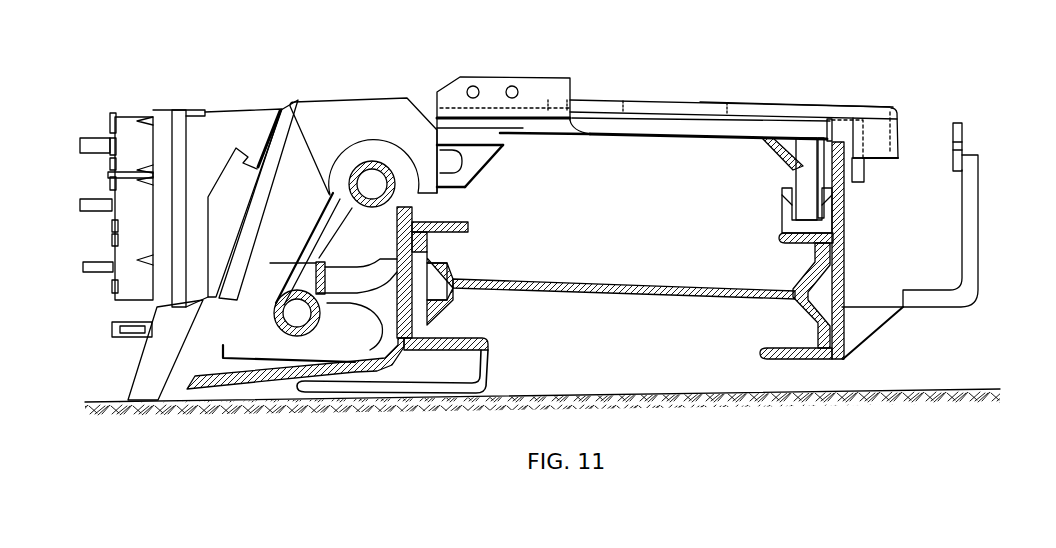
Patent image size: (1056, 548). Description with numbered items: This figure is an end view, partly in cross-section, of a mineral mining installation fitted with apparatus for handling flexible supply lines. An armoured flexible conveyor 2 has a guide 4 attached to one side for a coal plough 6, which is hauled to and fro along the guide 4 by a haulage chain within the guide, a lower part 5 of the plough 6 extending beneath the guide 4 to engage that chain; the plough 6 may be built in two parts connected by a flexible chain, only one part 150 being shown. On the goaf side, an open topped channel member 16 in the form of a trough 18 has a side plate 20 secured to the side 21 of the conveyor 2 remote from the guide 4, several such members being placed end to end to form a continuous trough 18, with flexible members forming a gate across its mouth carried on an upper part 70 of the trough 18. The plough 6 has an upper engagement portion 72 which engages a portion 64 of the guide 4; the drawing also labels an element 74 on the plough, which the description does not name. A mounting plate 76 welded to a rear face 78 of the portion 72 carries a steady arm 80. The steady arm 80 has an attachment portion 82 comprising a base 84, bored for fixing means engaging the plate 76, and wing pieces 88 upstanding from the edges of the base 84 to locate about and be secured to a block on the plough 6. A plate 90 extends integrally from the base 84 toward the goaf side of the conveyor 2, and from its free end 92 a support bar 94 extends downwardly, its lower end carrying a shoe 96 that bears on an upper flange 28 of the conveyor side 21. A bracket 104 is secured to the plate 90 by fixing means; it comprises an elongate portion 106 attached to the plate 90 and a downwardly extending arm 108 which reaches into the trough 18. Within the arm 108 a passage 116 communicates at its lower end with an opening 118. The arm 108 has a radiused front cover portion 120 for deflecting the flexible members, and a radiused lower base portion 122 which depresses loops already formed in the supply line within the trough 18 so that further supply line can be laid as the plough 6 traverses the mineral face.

The armoured flexible conveyor 2 is at (600, 300).
The guide 4 is at (331, 212).
The lower part of the plough 5 is at (328, 345).
The coal plough 6 is at (250, 105).
The open topped channel member 16 is at (982, 193).
The trough 18 is at (952, 243).
The side plate 20 is at (855, 332).
The side of the conveyor 21 is at (820, 345).
The upper flange 28 is at (792, 237).
The portion of the guide 64 is at (91, 138).
The upper part of the trough 70 is at (963, 132).
The upper engagement portion 72 is at (346, 118).
The pivot pin 74 is at (375, 166).
The mounting plate 76 is at (452, 133).
The rear face 78 is at (451, 192).
The steady arm 80 is at (630, 142).
The attachment portion 82 is at (549, 140).
The base 84 is at (540, 129).
The wing pieces 88 is at (540, 92).
The plate 90 is at (673, 122).
The free end of the plate 92 is at (820, 128).
The support bar 94 is at (804, 178).
The shoe 96 is at (790, 212).
The bracket 104 is at (706, 101).
The elongate portion 106 is at (597, 104).
The downwardly extending arm 108 is at (959, 126).
The passage 116 is at (892, 110).
The opening 118 is at (884, 160).
The radiused front cover portion 120 is at (901, 140).
The lower base portion 122 is at (858, 184).
The part of the plough 150 is at (249, 232).